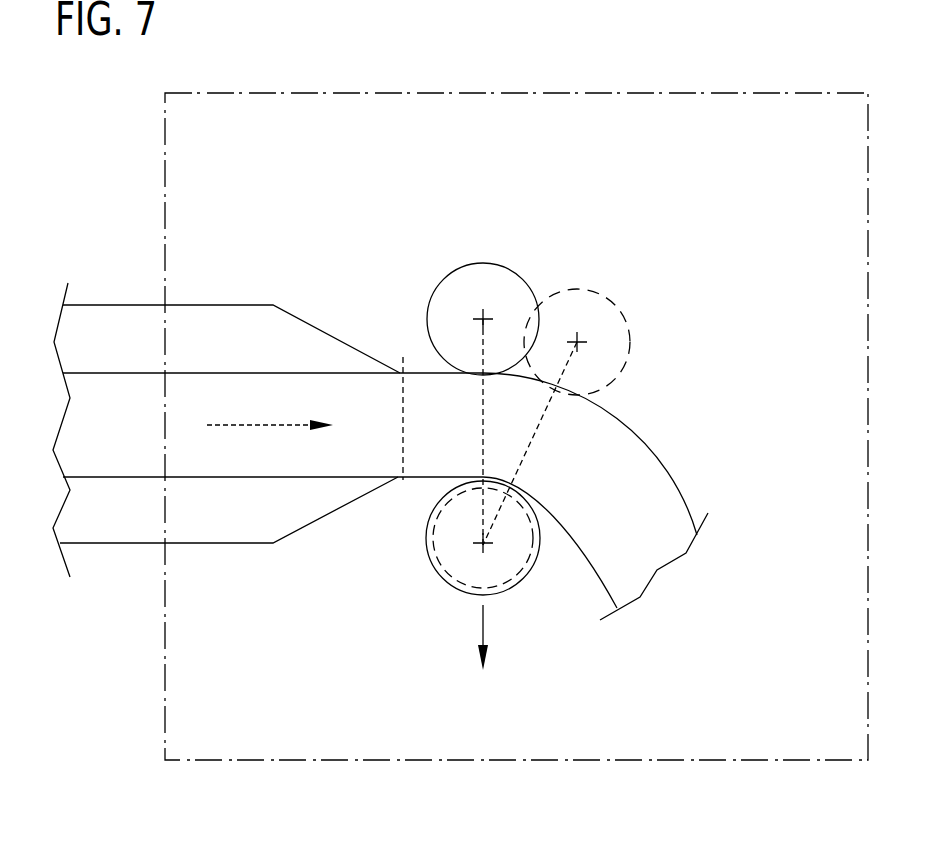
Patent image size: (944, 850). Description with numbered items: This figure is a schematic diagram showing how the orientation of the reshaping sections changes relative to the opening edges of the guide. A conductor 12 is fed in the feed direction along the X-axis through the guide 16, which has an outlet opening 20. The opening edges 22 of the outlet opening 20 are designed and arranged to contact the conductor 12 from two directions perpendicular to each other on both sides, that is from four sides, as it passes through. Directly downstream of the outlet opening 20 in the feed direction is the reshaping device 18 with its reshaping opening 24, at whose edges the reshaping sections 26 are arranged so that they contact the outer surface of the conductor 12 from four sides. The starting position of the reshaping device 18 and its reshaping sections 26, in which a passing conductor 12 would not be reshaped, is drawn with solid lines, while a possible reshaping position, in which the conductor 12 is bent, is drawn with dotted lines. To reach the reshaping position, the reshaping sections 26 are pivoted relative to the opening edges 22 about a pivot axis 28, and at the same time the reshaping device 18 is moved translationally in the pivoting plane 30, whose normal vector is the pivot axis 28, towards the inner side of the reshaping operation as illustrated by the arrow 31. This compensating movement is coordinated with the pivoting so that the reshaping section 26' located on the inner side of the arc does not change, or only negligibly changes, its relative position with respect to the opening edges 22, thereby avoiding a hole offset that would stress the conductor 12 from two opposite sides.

The conductor 12 is at (648, 492).
The guide 16 is at (126, 276).
The reshaping device 18 is at (646, 233).
The outlet opening 20 is at (378, 433).
The opening edges 22 is at (392, 360).
The reshaping opening 24 is at (466, 440).
The reshaping sections 26 is at (483, 273).
The reshaping section on the inner side of the arc 26' is at (422, 538).
The pivot axis 28 is at (480, 546).
The pivoting plane 30 is at (495, 742).
The arrow 31 is at (489, 622).